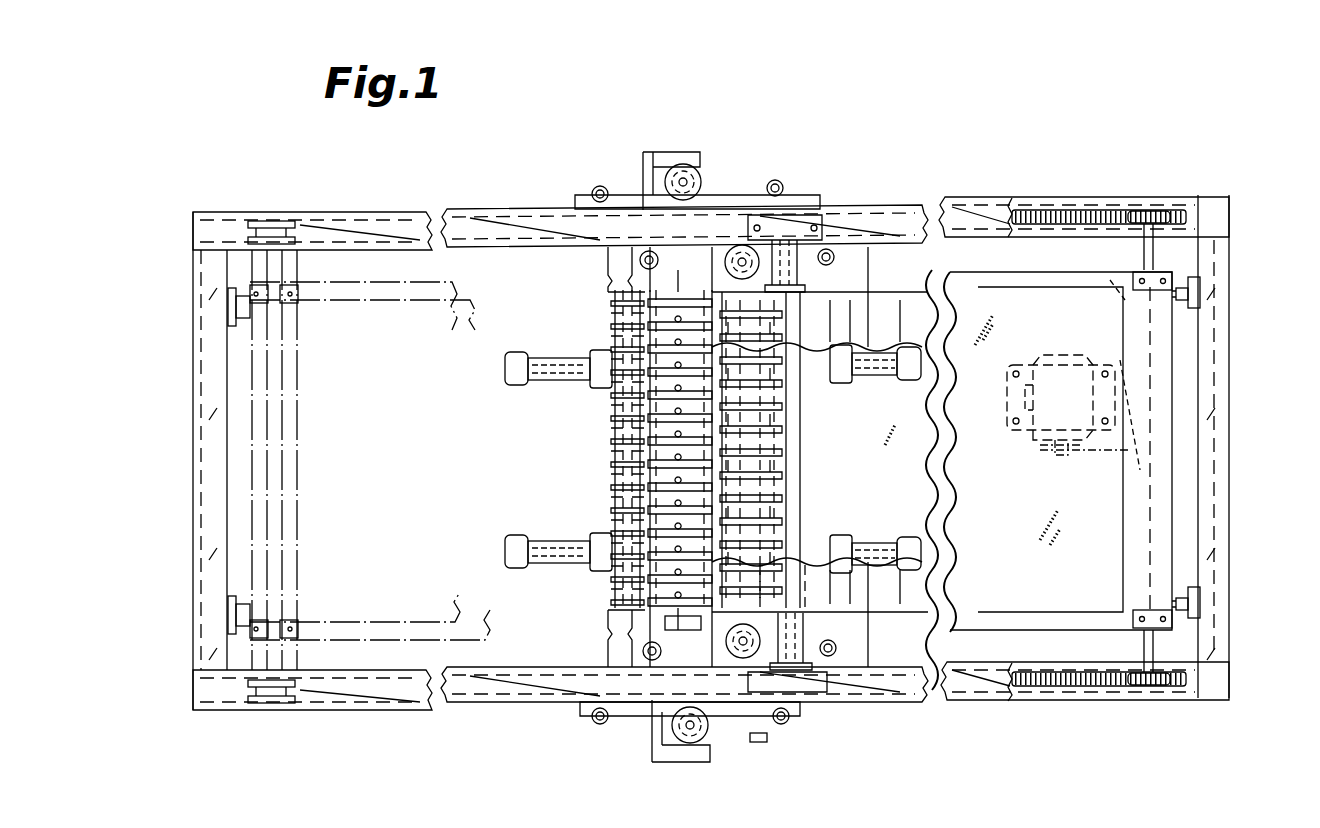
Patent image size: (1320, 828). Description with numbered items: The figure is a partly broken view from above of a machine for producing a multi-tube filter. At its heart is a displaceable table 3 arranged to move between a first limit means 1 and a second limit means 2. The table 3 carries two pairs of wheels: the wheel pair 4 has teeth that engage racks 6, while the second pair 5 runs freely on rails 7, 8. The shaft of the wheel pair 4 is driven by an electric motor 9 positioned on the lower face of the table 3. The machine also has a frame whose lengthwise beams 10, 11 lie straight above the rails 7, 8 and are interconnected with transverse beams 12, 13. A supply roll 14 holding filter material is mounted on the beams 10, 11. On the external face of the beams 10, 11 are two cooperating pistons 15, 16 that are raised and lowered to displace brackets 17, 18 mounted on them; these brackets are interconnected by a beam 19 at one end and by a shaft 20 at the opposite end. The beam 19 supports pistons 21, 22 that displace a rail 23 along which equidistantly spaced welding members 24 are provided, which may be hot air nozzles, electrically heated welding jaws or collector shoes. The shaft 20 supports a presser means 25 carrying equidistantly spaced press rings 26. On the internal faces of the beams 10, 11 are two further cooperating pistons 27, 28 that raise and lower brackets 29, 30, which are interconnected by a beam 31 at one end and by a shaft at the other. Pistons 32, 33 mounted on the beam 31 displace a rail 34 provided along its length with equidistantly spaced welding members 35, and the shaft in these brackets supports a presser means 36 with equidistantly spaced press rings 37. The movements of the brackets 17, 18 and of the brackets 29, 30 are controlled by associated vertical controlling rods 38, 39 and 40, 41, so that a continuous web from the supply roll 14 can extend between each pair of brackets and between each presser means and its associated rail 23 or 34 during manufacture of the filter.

The first limit means 1 is at (1200, 294).
The second limit means 2 is at (236, 306).
The table 3 is at (1140, 520).
The wheel pair 4 is at (1150, 212).
The second wheel pair 5 is at (264, 220).
The racks 6 is at (1062, 210).
The rail 7 is at (494, 690).
The rail 8 is at (468, 218).
The electric motor 9 is at (1035, 432).
The lengthwise beam 10 is at (368, 690).
The lengthwise beam 11 is at (340, 232).
The transverse beam 12 is at (216, 416).
The transverse beam 13 is at (1214, 394).
The supply roll 14 is at (860, 614).
The piston 15 is at (700, 732).
The piston 16 is at (692, 176).
The bracket 17 is at (648, 742).
The bracket 18 is at (641, 194).
The beam 19 is at (640, 265).
The shaft 20 is at (760, 740).
The piston 21 is at (532, 540).
The piston 22 is at (568, 352).
The rail 23 is at (612, 436).
The welding members 24 is at (612, 455).
The presser means 25 is at (780, 492).
The press rings 26 is at (782, 440).
The piston 27 is at (665, 624).
The piston 28 is at (762, 256).
The bracket 29 is at (800, 642).
The bracket 30 is at (800, 262).
The beam 31 is at (792, 456).
The piston 32 is at (880, 532).
The piston 33 is at (900, 346).
The rail 34 is at (784, 396).
The welding members 35 is at (780, 472).
The presser means 36 is at (648, 492).
The press rings 37 is at (613, 400).
The vertical controlling rod 38 is at (593, 188).
The vertical controlling rod 39 is at (783, 182).
The vertical controlling rod 40 is at (644, 651).
The vertical controlling rod 41 is at (836, 257).